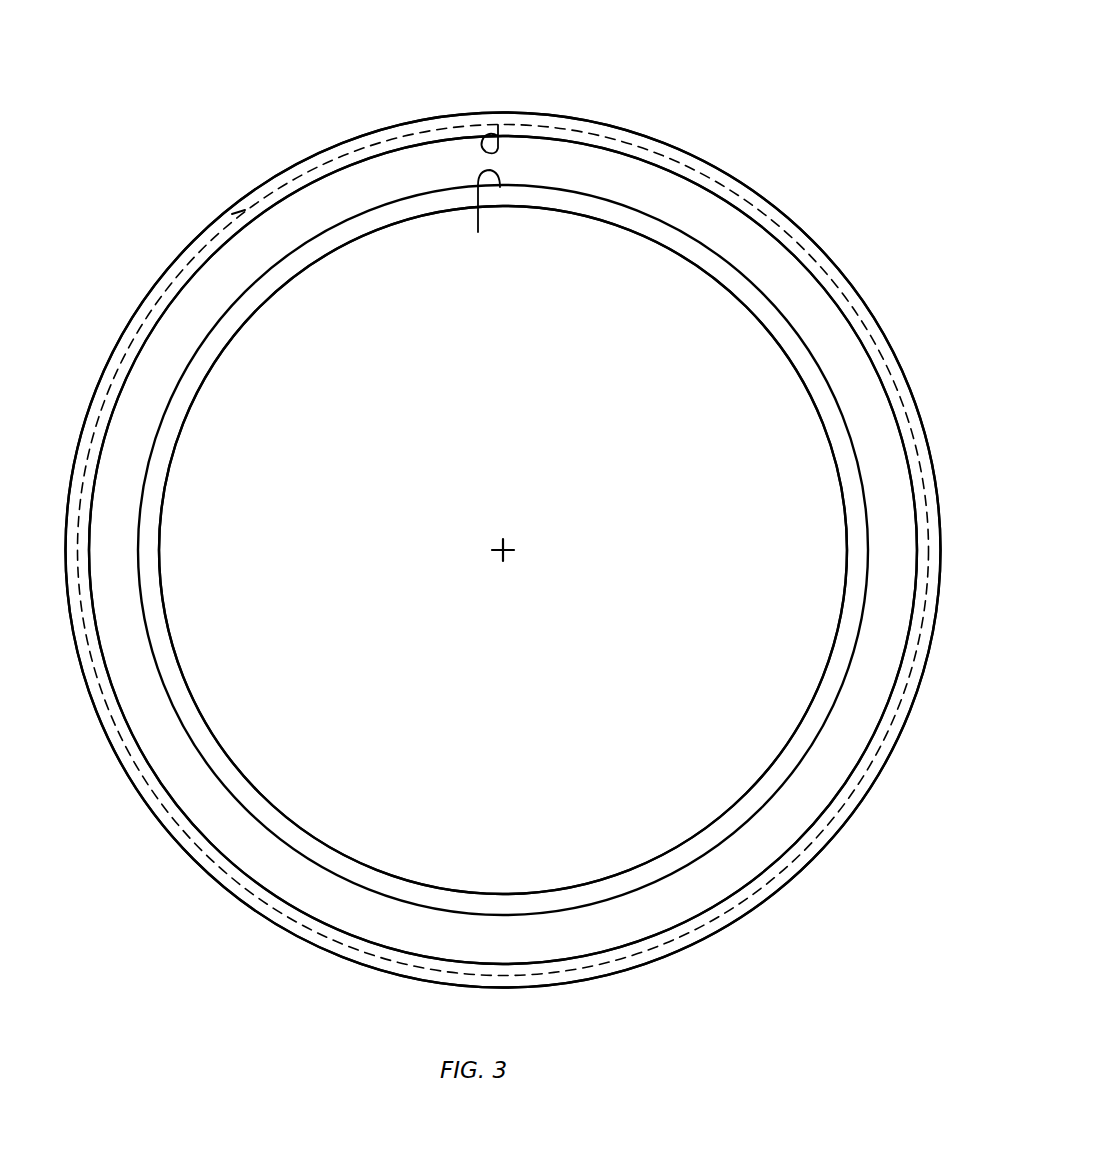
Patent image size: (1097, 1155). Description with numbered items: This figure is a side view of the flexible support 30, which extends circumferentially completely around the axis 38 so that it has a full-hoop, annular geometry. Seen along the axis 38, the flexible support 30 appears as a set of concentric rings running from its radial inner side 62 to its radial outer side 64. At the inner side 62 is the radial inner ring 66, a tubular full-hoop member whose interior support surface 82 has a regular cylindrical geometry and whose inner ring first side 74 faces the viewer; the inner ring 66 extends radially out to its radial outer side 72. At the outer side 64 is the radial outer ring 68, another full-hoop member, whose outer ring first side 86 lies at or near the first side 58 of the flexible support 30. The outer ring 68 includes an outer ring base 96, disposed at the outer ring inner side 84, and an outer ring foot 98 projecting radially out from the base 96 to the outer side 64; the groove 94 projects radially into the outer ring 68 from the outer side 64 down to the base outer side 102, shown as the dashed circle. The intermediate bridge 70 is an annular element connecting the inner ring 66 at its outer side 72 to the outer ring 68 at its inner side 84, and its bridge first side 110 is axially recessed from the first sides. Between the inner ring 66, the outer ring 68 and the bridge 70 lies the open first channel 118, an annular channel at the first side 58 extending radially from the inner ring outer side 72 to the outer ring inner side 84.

The flexible support 30 is at (816, 130).
The first side of the flexible support 58 is at (494, 550).
The outer ring first side 86 is at (173, 262).
The radial outer side of the flexible support 64 is at (517, 111).
The groove 94 is at (318, 158).
The outer ring foot 98 is at (282, 178).
The outer side of the outer ring base 102 is at (240, 212).
The radial inner side of the support outer ring 84 is at (498, 125).
The outer ring base 96 is at (267, 202).
The radial outer ring 68 is at (650, 120).
The bridge first side 110 is at (359, 195).
The radial outer side of the support inner ring 72 is at (478, 220).
The radial inner side of the flexible support 62 is at (503, 549).
The interior support surface 82 is at (503, 204).
The inner ring first side 74 is at (212, 343).
The radial inner ring 66 is at (621, 245).
The intermediate bridge 70 is at (687, 255).
The first channel 118 is at (782, 284).
The axis 38 is at (506, 553).